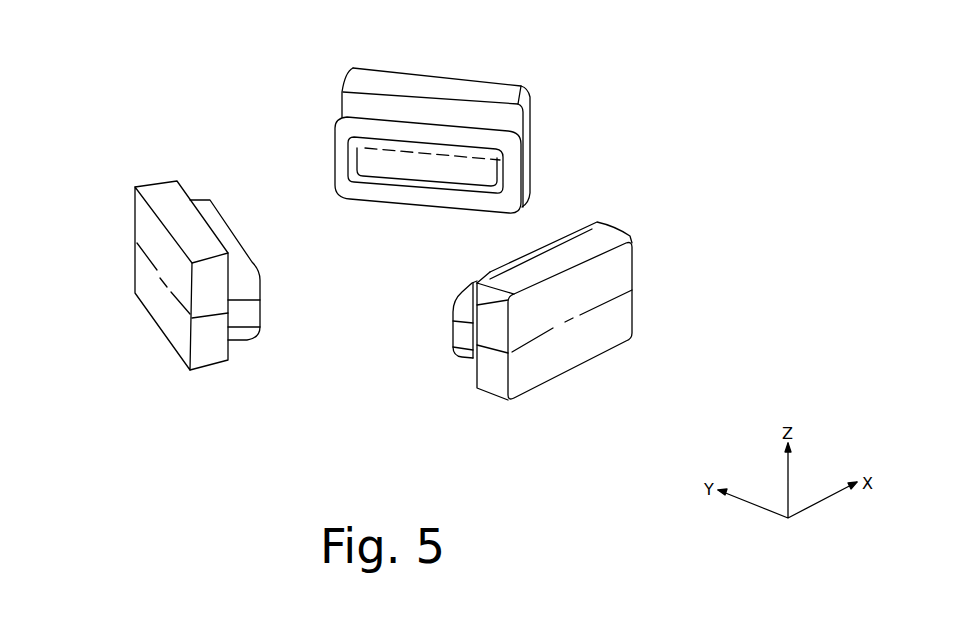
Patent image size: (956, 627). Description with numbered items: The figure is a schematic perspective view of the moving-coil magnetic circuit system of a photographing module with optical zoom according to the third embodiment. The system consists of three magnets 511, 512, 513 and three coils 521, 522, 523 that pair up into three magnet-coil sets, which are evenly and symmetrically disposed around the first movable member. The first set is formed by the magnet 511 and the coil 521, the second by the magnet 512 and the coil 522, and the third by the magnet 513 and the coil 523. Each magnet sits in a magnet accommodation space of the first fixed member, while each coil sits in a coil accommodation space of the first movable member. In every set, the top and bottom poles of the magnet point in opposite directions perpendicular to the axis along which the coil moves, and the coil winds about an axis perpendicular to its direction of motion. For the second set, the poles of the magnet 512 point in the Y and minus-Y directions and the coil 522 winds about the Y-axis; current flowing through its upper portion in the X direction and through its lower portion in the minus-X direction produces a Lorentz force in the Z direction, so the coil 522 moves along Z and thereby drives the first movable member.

The magnet 511 is at (443, 85).
The magnet 512 is at (588, 238).
The magnet 513 is at (175, 215).
The coil 521 is at (373, 118).
The coil 522 is at (463, 333).
The coil 523 is at (208, 217).